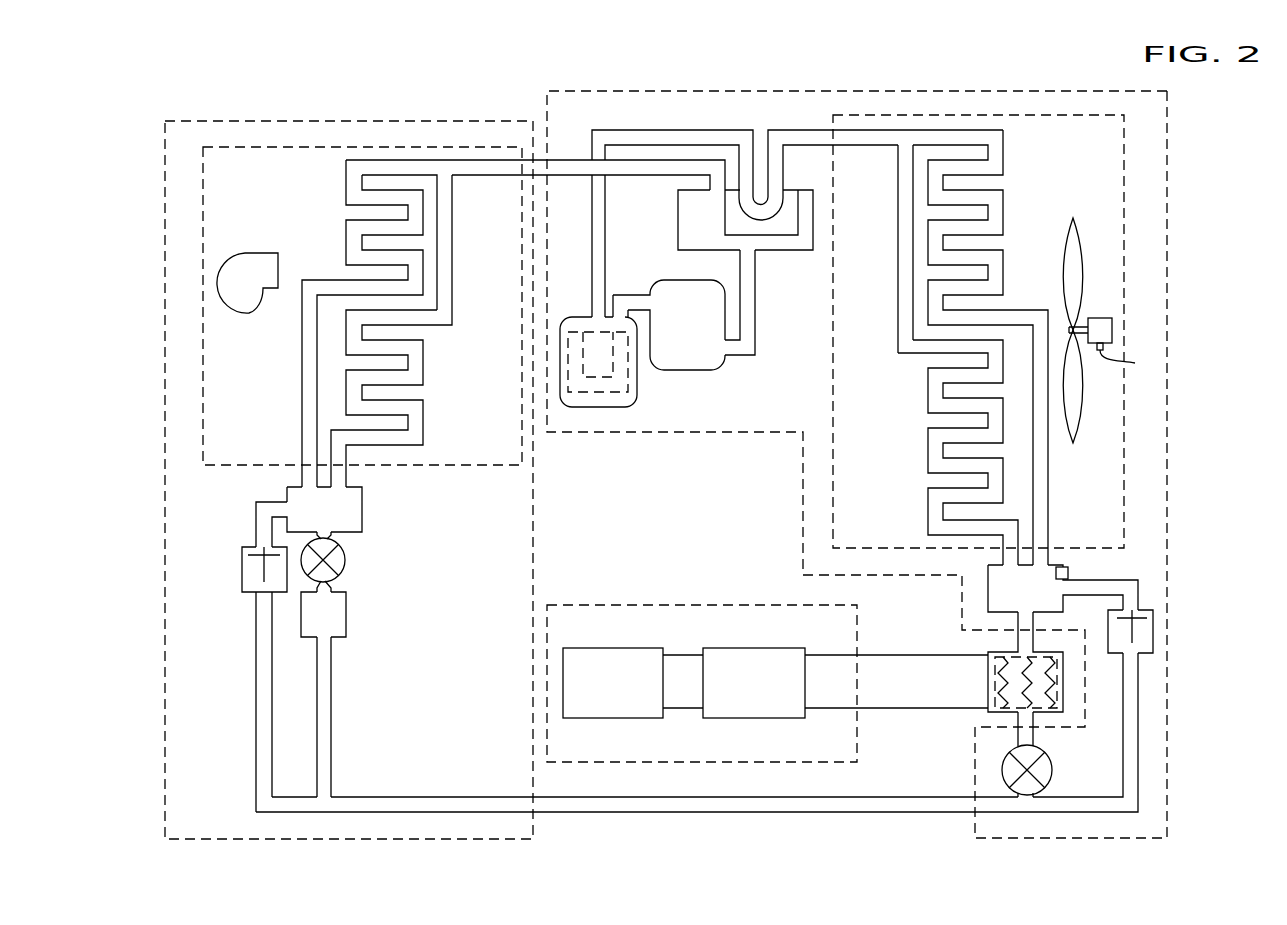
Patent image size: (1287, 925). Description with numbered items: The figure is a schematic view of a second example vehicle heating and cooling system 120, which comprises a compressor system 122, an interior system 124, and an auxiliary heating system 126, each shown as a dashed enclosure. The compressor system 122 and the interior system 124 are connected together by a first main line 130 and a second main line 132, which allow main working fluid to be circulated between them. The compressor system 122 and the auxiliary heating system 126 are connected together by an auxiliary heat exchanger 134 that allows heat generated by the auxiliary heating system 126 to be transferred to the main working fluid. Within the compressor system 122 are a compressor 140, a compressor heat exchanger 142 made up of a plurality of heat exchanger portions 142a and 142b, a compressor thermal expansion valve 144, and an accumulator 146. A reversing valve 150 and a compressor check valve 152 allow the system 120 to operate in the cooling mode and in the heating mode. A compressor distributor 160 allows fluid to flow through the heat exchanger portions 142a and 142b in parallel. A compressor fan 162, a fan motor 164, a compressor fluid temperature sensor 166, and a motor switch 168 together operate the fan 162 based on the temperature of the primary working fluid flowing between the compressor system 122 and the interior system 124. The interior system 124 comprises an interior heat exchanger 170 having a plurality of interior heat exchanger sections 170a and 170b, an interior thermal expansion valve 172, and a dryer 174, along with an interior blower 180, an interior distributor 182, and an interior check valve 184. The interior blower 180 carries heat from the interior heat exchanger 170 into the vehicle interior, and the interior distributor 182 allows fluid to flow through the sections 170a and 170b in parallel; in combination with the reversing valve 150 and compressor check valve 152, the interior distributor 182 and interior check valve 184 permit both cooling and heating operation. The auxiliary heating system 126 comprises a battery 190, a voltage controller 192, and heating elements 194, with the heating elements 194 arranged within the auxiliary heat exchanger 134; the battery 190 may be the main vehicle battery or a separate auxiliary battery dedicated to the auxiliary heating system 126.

The vehicle heating and cooling system 120 is at (1194, 132).
The compressor system 122 is at (1159, 185).
The interior system 124 is at (333, 125).
The auxiliary heating system 126 is at (609, 613).
The first main line 130 is at (487, 168).
The second main line 132 is at (462, 805).
The auxiliary heat exchanger 134 is at (1008, 652).
The compressor 140 is at (689, 365).
The compressor heat exchanger 142 is at (1063, 125).
The heat exchanger portion 142a is at (1008, 195).
The heat exchanger portion 142b is at (927, 427).
The compressor thermal expansion valve 144 is at (1043, 772).
The accumulator 146 is at (620, 398).
The reversing valve 150 is at (687, 213).
The compressor check valve 152 is at (1147, 635).
The compressor distributor 160 is at (1000, 593).
The compressor fan 162 is at (1072, 273).
The fan motor 164 is at (1100, 325).
The compressor fluid temperature sensor 166 is at (1070, 573).
The motor switch 168 is at (1132, 364).
The interior heat exchanger 170 is at (258, 153).
The interior heat exchanger section 170a is at (343, 203).
The interior heat exchanger section 170b is at (427, 372).
The interior thermal expansion valve 172 is at (342, 567).
The dryer 174 is at (336, 615).
The interior blower 180 is at (250, 267).
The interior distributor 182 is at (355, 512).
The interior check valve 184 is at (247, 580).
The battery 190 is at (617, 712).
The voltage controller 192 is at (748, 712).
The heating elements 194 is at (998, 692).